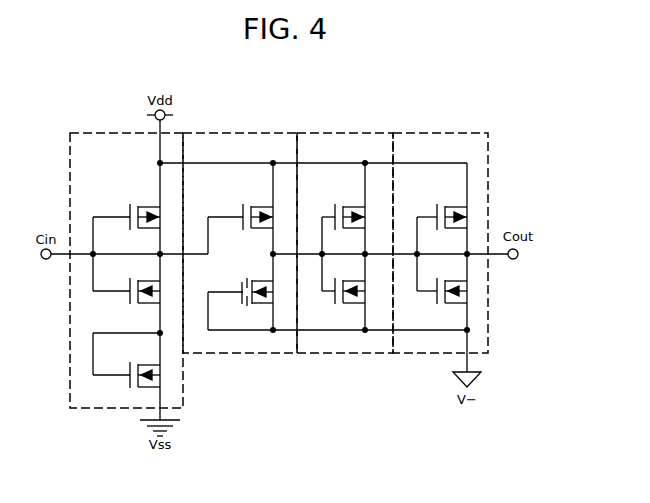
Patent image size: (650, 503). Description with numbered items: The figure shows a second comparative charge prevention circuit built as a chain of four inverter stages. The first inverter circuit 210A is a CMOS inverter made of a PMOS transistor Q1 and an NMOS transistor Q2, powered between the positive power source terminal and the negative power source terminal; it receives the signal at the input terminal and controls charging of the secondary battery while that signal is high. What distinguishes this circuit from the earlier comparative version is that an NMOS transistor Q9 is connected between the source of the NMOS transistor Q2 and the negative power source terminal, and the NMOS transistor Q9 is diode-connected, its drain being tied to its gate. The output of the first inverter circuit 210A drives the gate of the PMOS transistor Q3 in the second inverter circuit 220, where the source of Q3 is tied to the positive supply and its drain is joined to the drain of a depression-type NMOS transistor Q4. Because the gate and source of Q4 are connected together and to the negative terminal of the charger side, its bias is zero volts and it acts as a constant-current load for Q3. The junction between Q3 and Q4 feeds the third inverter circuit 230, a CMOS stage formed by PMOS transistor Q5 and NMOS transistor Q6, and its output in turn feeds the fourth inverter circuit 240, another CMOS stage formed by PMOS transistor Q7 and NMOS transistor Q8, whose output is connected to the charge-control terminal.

The first inverter circuit 210A is at (100, 133).
The second inverter circuit 220 is at (244, 133).
The third inverter circuit 230 is at (349, 133).
The fourth inverter circuit 240 is at (447, 133).
The PMOS transistor Q1 is at (145, 208).
The NMOS transistor Q2 is at (145, 284).
The PMOS transistor Q3 is at (258, 208).
The depression-type NMOS transistor Q4 is at (257, 285).
The PMOS transistor Q5 is at (350, 208).
The NMOS transistor Q6 is at (350, 284).
The PMOS transistor Q7 is at (452, 208).
The NMOS transistor Q8 is at (452, 284).
The NMOS transistor Q9 is at (145, 367).